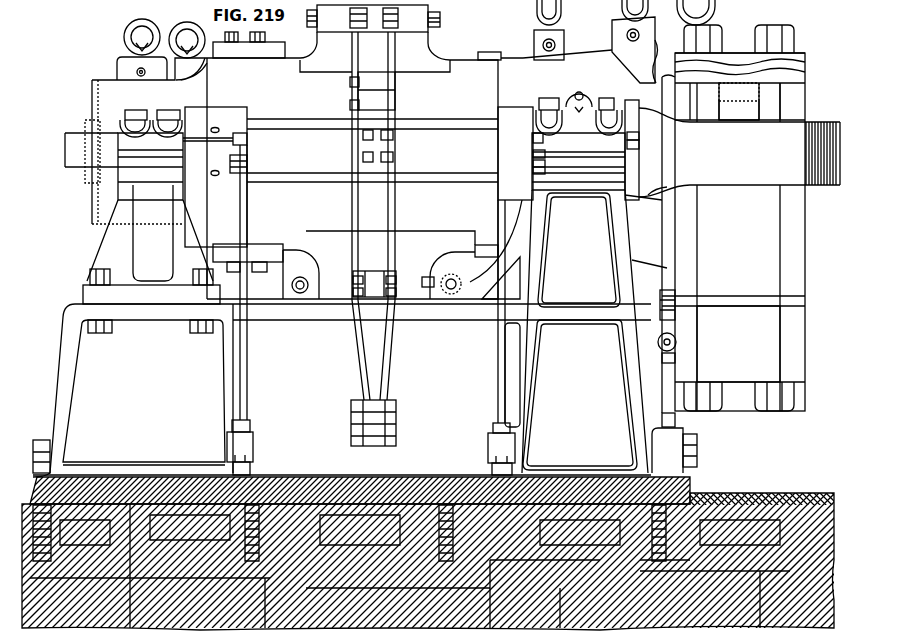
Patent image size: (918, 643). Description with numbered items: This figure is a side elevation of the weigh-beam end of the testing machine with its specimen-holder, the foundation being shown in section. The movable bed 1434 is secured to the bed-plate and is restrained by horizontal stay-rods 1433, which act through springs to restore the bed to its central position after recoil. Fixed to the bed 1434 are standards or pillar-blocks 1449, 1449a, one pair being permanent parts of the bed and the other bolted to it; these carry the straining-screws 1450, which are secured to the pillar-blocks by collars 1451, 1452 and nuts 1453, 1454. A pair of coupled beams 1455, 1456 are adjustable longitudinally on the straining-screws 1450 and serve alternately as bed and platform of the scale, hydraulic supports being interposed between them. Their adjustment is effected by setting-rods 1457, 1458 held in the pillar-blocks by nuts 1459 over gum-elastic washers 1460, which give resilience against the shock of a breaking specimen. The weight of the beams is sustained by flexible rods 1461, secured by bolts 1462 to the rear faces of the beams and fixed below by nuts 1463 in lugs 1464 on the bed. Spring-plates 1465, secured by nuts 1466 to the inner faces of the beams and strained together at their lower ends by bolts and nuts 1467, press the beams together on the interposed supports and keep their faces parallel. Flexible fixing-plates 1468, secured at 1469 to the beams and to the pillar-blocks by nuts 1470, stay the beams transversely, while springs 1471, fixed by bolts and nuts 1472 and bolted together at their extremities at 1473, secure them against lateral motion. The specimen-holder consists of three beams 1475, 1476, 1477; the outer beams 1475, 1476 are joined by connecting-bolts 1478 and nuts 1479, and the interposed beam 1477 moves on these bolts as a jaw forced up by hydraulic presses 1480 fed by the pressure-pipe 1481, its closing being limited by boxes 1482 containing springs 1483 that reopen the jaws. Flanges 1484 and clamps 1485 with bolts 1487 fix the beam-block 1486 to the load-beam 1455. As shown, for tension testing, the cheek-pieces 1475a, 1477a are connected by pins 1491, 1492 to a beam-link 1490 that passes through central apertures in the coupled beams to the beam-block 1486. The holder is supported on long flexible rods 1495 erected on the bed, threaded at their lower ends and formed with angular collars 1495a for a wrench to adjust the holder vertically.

The horizontal stay-rods 1433 is at (687, 450).
The movable bed 1434 is at (342, 390).
The standards (pillar-blocks) 1449 is at (578, 144).
The standards (pillar-blocks) 1449a is at (151, 207).
The straining-screws 1450 is at (765, 153).
The collar 1451 is at (657, 150).
The collar 1452 is at (515, 153).
The nut 1453 is at (216, 177).
The nut 1454 is at (90, 151).
The coupled beam (load-beam) 1455 is at (352, 165).
The coupled beam 1456 is at (372, 166).
The setting-rod 1457 is at (208, 134).
The setting-rod 1458 is at (528, 138).
The nuts 1459 is at (639, 147).
The gum-elastic washers 1460 is at (636, 132).
The flexible rods (struts) 1461 is at (247, 142).
The bolts 1462 is at (374, 164).
The nuts 1463 is at (372, 447).
The lugs 1464 is at (371, 447).
The spring-plates 1465 is at (372, 202).
The nuts 1466 is at (358, 183).
The bolts and nuts 1467 is at (385, 423).
The flexible fixing-plates 1468 is at (452, 275).
The fixing-plate attachment 1469 is at (310, 274).
The nuts 1470 is at (383, 281).
The fixing plates or springs 1471 is at (373, 152).
The bolts and nuts 1472 is at (370, 18).
The bolted extremities 1473 is at (400, 152).
The outer beam (fixed jaw) 1475 is at (797, 77).
The cheek-piece 1475a is at (567, 81).
The outer beam 1476 is at (738, 344).
The interposed beam (movable jaw) 1477 is at (740, 232).
The cheek-piece 1477a is at (652, 244).
The connecting-bolts 1478 is at (740, 101).
The nuts 1479 is at (740, 205).
The hydraulic presses 1480 is at (733, 301).
The pressure-pipe 1481 is at (675, 326).
The boxes 1482 is at (384, 293).
The springs 1483 is at (429, 88).
The flanges 1484 is at (414, 152).
The clamps 1485 is at (249, 152).
The beam-block 1486 is at (149, 159).
The bolts 1487 is at (271, 36).
The beam-link 1490 is at (88, 150).
The pin 1491 is at (459, 315).
The pin 1492 is at (635, 41).
The supporting rods 1495 is at (568, 331).
The angular collars 1495a is at (689, 420).